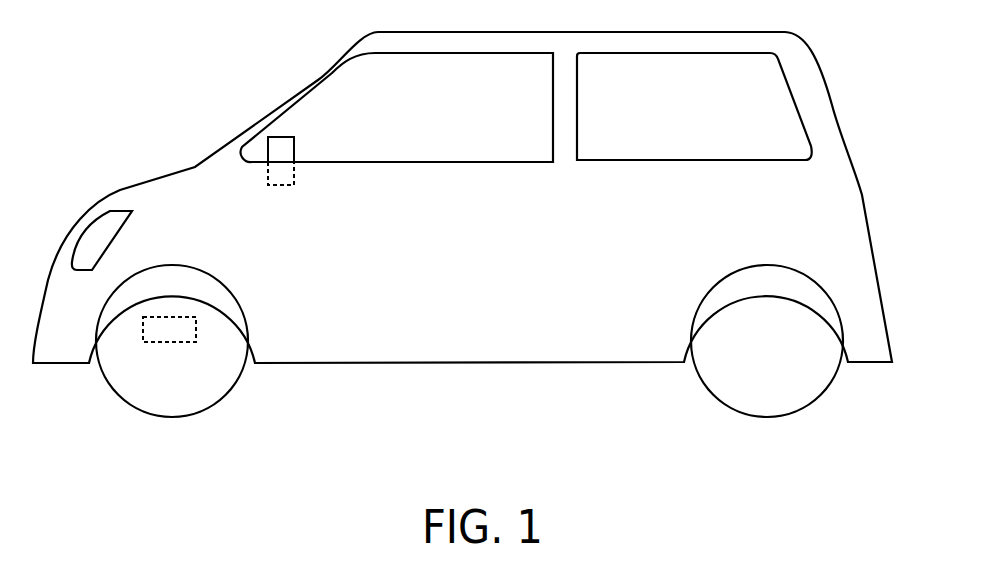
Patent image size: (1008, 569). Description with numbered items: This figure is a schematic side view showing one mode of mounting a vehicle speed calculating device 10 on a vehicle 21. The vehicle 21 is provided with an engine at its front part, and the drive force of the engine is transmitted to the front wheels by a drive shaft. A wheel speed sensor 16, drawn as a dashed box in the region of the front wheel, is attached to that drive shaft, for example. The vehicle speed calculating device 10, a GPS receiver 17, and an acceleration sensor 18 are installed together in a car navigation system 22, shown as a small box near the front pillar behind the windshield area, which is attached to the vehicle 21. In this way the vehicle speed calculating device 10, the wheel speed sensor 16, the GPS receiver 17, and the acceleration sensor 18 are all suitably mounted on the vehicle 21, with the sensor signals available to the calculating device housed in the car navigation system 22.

The vehicle 21 is at (817, 113).
The car navigation system 22 is at (211, 98).
The vehicle speed calculating device 10 is at (281, 161).
The GPS receiver 17 is at (281, 161).
The acceleration sensor 18 is at (279, 143).
The wheel speed sensor 16 is at (168, 327).